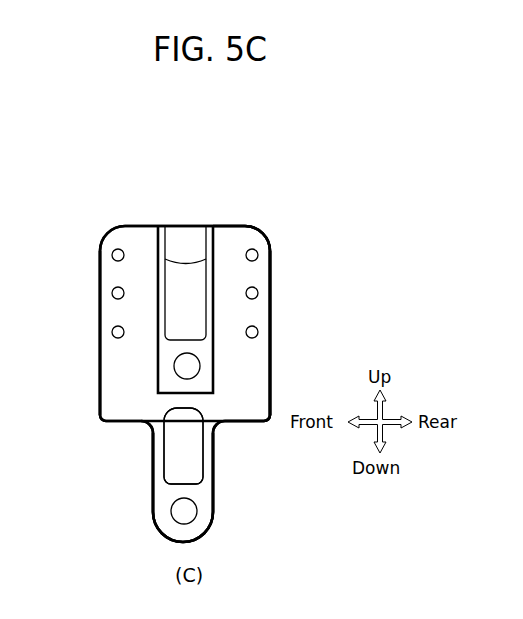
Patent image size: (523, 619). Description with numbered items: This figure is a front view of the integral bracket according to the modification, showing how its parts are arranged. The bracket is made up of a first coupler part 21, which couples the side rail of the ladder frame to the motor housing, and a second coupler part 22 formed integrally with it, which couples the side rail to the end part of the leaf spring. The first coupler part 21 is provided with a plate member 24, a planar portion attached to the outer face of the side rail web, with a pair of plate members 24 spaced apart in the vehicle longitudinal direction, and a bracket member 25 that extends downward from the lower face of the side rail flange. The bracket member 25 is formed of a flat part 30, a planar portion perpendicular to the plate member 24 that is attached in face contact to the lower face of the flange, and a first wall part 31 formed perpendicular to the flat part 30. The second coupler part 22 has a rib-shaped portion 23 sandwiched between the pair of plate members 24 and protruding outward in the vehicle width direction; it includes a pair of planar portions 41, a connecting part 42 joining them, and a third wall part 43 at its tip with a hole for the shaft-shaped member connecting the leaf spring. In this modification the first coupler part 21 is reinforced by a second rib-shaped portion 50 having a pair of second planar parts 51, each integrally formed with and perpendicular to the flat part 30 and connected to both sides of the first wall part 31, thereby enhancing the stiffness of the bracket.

The first coupler part 21 is at (280, 517).
The second coupler part 22 is at (209, 207).
The rib-shaped portion 23 is at (232, 249).
The plate member 24 is at (100, 320).
The bracket member 25 is at (83, 405).
The flat part 30 is at (242, 422).
The first wall part 31 is at (213, 512).
The planar portions 41 is at (158, 275).
The connecting part 42 is at (188, 261).
The third wall part 43 is at (200, 355).
The second rib-shaped portion 50 is at (147, 476).
The second planar parts 51 is at (203, 463).